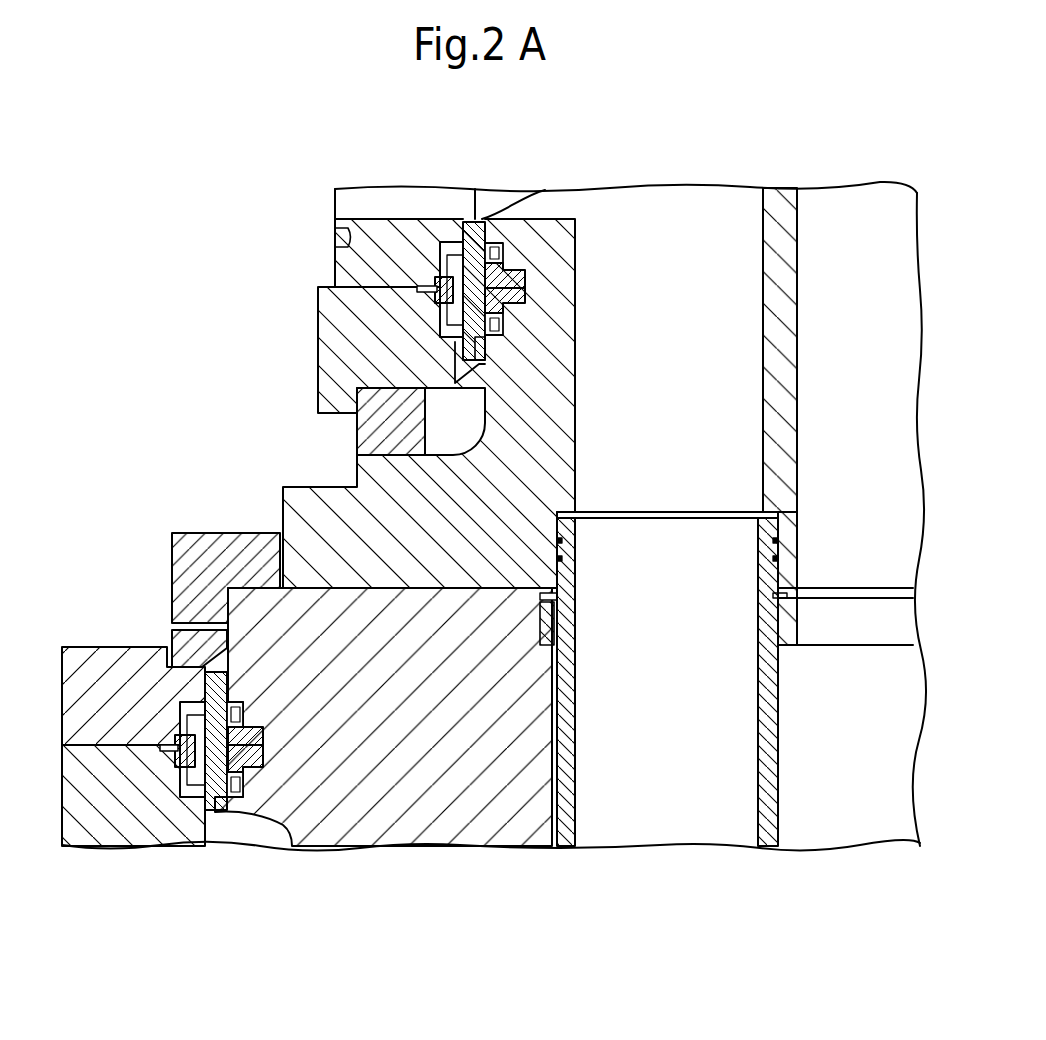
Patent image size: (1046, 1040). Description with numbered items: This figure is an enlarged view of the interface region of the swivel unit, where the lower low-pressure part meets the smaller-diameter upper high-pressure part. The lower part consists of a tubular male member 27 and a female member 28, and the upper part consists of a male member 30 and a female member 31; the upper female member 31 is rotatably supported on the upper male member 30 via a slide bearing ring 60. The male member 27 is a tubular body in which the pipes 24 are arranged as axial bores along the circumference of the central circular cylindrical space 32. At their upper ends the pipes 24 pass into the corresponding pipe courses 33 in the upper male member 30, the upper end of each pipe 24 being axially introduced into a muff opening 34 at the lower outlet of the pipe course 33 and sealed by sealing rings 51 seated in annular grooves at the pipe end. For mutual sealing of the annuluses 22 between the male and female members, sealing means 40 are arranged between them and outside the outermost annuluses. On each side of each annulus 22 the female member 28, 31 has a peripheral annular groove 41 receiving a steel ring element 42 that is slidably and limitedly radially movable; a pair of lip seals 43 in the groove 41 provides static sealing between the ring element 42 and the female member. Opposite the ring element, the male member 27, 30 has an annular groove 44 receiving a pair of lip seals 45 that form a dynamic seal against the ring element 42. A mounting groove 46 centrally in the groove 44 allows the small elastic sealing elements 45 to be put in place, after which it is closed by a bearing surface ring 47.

The annulus 22 is at (516, 189).
The pipe 24 is at (568, 715).
The male member 27 is at (400, 812).
The female member 28 is at (93, 830).
The male member 30 is at (380, 478).
The female member 31 is at (340, 340).
The central circular cylindrical space 32 is at (862, 755).
The pipe course 33 is at (719, 215).
The muff opening 34 is at (782, 518).
The sealing means 40 is at (459, 208).
The annular groove 41 is at (455, 345).
The ring element 42 is at (457, 240).
The lip seal 43 is at (437, 287).
The annular groove 44 is at (515, 310).
The lip seal 45 is at (497, 250).
The mounting groove 46 is at (263, 767).
The bearing surface ring 47 is at (523, 285).
The sealing ring 51 is at (776, 560).
The slide bearing ring 60 is at (372, 428).